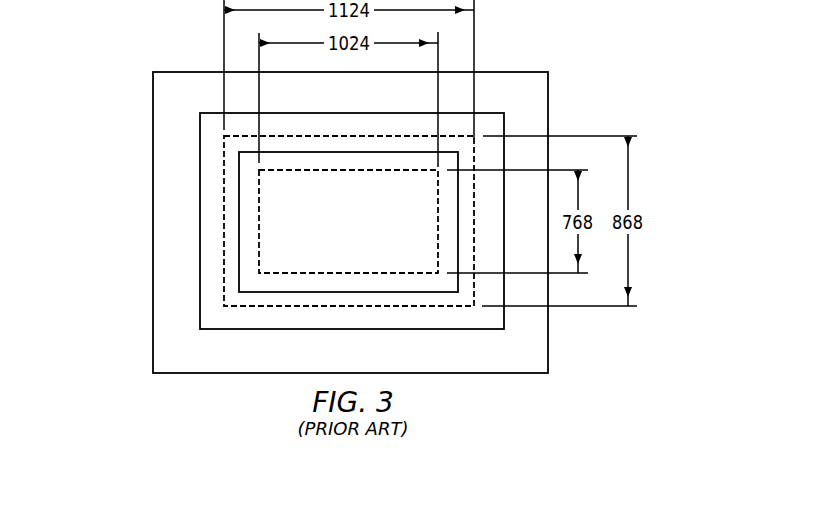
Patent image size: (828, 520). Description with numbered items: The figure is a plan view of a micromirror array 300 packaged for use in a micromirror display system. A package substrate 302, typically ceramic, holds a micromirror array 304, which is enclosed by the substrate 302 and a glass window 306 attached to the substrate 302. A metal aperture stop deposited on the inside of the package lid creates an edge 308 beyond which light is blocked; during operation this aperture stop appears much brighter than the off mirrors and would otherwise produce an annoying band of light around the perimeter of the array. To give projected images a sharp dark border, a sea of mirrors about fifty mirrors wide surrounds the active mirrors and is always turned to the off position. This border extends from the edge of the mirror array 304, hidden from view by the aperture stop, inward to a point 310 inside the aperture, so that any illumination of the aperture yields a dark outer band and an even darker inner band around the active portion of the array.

The micromirror array 300 is at (112, 186).
The package substrate 302 is at (153, 231).
The micromirror array 304 is at (247, 306).
The glass window 306 is at (342, 330).
The edge 308 is at (360, 292).
The point 310 is at (408, 273).